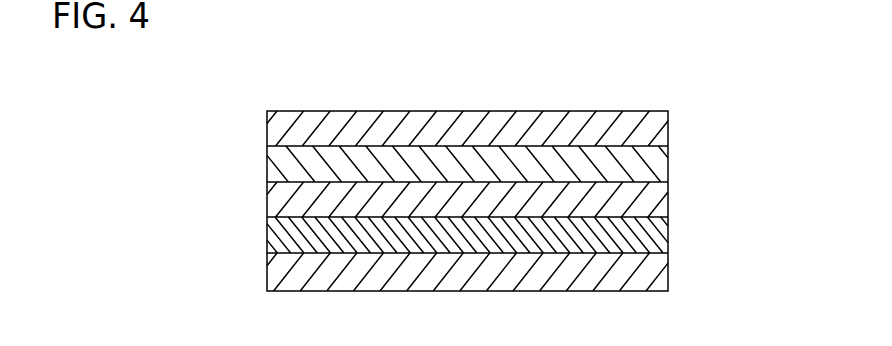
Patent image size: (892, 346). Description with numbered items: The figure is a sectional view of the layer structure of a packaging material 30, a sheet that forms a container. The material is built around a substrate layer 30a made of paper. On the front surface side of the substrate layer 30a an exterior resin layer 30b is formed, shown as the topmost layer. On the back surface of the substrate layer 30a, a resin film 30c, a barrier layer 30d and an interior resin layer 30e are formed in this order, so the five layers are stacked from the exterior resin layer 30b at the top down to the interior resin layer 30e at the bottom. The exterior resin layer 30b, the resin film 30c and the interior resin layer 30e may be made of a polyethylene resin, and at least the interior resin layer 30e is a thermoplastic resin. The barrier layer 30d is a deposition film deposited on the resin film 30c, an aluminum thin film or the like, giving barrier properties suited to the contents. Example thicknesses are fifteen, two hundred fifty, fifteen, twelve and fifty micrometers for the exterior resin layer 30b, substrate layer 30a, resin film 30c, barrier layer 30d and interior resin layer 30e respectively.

The packaging material 30 is at (485, 90).
The substrate layer 30a is at (663, 162).
The exterior resin layer 30b is at (663, 130).
The resin film 30c is at (663, 197).
The barrier layer 30d is at (663, 233).
The interior resin layer 30e is at (663, 270).